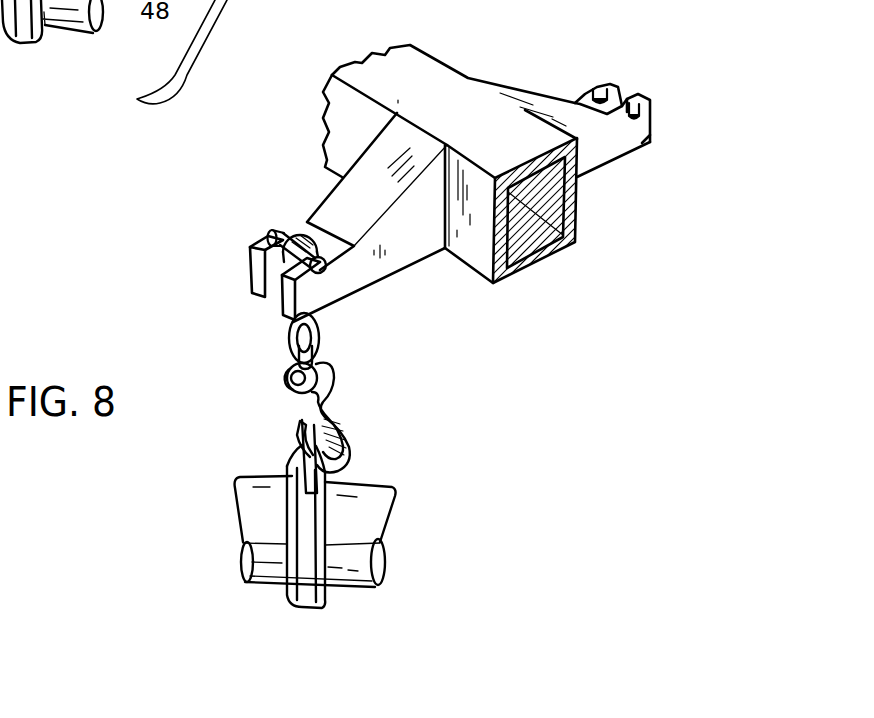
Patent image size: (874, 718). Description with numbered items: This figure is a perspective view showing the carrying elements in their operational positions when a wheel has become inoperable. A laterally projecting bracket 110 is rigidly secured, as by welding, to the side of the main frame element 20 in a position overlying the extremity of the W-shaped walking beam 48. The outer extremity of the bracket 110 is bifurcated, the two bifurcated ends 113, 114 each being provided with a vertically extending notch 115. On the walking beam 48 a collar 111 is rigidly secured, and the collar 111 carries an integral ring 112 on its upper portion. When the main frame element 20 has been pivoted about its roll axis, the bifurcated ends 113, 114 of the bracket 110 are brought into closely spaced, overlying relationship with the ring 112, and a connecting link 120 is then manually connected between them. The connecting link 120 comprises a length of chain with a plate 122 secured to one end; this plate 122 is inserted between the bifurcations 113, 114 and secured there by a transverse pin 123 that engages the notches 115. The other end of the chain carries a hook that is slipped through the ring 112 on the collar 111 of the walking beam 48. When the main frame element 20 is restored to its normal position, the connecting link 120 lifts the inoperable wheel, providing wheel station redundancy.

The main frame element 20 is at (497, 286).
The W-shaped walking beam 48 is at (368, 500).
The laterally projecting bracket 110 is at (517, 90).
The collar 111 is at (341, 462).
The ring 112 is at (303, 452).
The bifurcated end 113 is at (610, 88).
The bifurcated end 114 is at (593, 157).
The vertically extending notch 115 is at (630, 125).
The connecting link 120 is at (272, 362).
The plate 122 is at (292, 230).
The transverse pin 123 is at (268, 233).